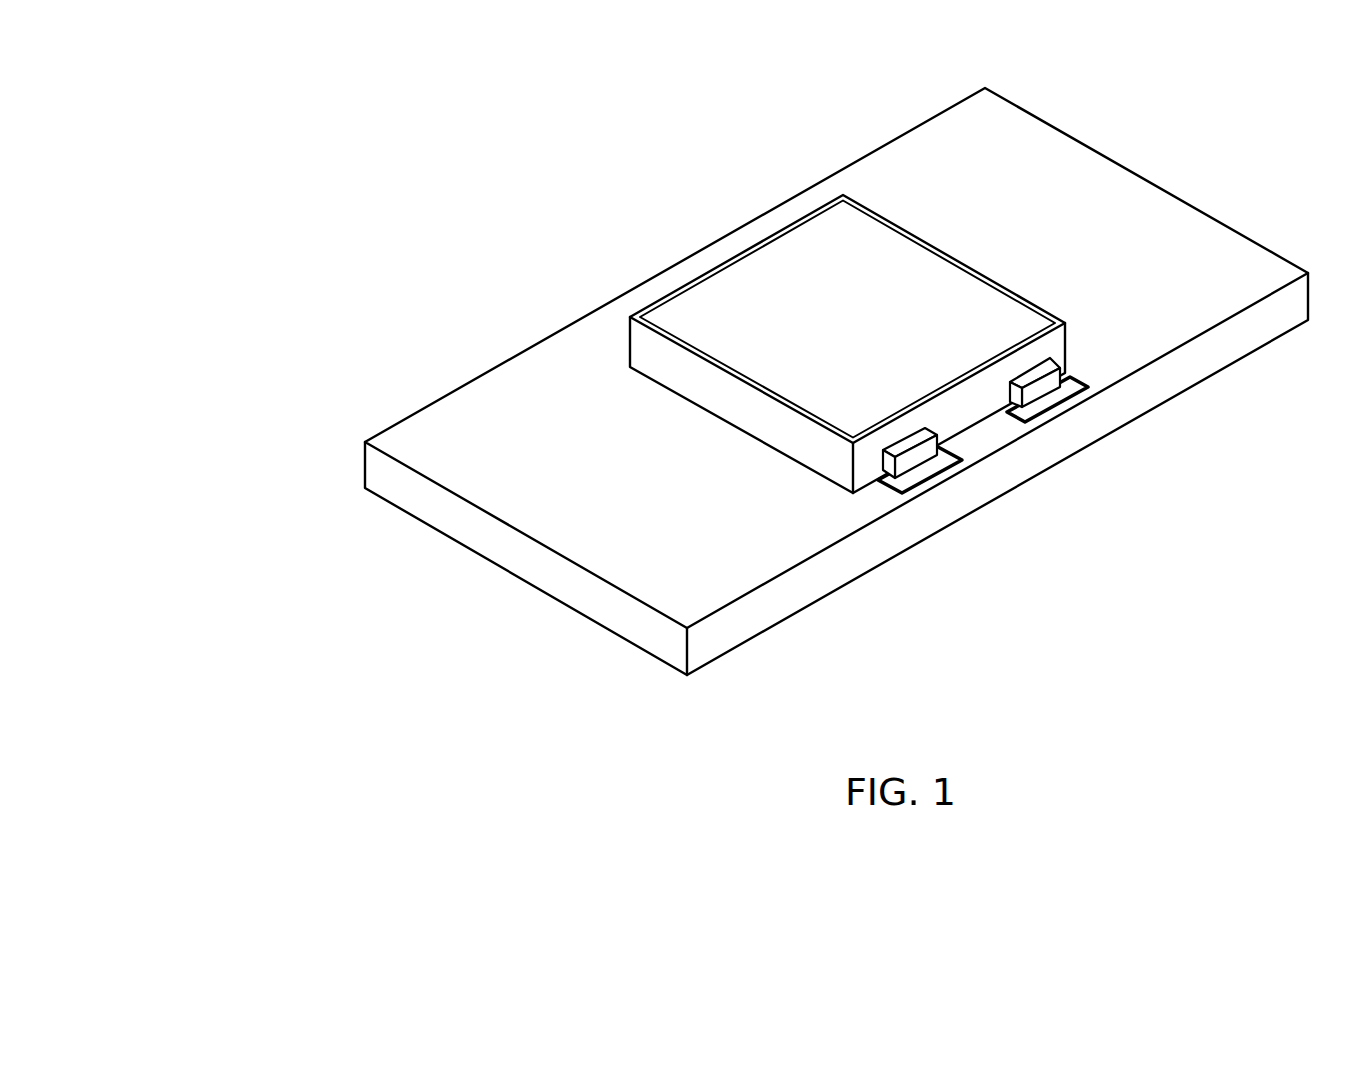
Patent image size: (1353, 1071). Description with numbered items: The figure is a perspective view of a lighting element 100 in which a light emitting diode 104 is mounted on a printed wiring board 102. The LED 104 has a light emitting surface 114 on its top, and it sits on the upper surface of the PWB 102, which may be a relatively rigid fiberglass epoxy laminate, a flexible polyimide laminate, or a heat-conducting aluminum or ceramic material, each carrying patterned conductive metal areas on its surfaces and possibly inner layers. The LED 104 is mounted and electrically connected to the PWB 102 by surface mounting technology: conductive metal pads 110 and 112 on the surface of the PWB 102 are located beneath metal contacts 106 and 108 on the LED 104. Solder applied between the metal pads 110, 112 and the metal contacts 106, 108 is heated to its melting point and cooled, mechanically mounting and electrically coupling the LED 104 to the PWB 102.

The lighting element 100 is at (455, 243).
The printed wiring board 102 is at (528, 583).
The light emitting diode 104 is at (803, 268).
The metal contact 106 is at (912, 490).
The metal contact 108 is at (1032, 422).
The conductive metal pad 110 is at (937, 475).
The conductive metal pad 112 is at (1072, 402).
The light emitting surface 114 is at (840, 233).